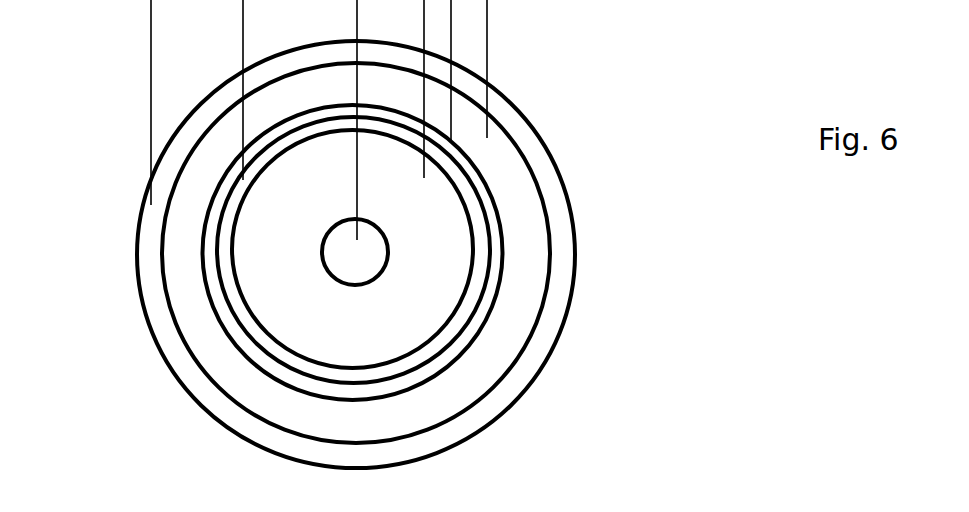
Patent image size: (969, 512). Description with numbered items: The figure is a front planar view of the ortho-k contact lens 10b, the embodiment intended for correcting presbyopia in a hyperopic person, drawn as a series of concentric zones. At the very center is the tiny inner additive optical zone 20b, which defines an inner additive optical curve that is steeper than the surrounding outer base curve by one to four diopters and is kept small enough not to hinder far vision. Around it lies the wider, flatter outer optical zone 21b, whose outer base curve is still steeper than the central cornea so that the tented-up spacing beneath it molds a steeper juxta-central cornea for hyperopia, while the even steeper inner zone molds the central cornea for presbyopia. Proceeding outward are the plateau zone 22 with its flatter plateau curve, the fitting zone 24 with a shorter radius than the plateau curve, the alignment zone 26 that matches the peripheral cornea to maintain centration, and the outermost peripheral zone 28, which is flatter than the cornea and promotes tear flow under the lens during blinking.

The ortho-k contact lens 10b is at (365, 238).
The inner additive optical zone 20b is at (355, 256).
The outer optical zone 21b is at (417, 305).
The plateau zone 22 is at (220, 254).
The fitting zone 24 is at (215, 298).
The alignment zone 26 is at (515, 191).
The peripheral zone 28 is at (518, 131).